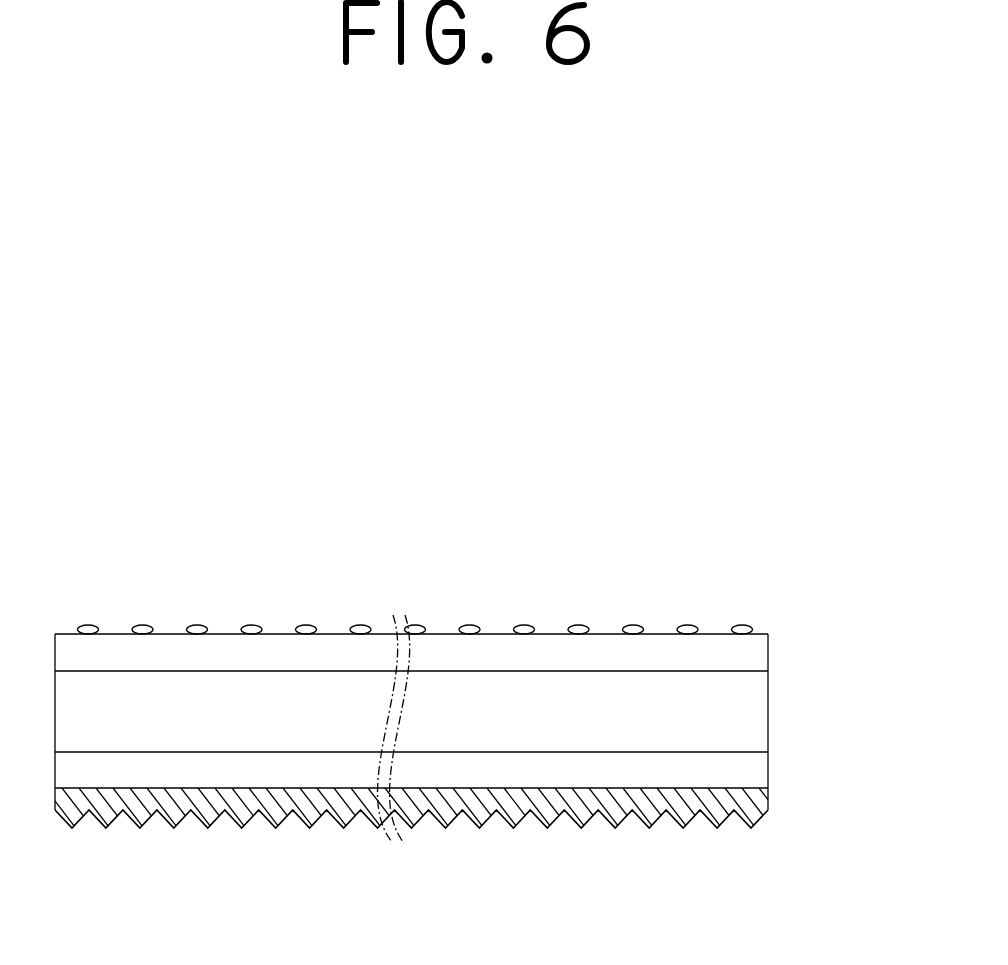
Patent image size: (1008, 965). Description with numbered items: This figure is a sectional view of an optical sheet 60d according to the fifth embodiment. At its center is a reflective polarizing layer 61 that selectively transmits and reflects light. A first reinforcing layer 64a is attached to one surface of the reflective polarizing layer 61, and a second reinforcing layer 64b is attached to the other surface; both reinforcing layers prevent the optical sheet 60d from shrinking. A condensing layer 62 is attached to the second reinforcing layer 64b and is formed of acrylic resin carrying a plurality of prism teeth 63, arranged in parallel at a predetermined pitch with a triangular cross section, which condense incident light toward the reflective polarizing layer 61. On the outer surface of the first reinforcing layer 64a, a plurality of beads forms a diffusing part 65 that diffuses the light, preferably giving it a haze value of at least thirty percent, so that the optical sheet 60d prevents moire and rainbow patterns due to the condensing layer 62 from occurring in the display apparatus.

The optical sheet 60d is at (756, 447).
The reflective polarizing layer 61 is at (768, 708).
The condensing layer 62 is at (768, 800).
The prism teeth 63 is at (658, 818).
The first reinforcing layer 64a is at (768, 652).
The second reinforcing layer 64b is at (768, 763).
The diffusing part 65 is at (470, 625).